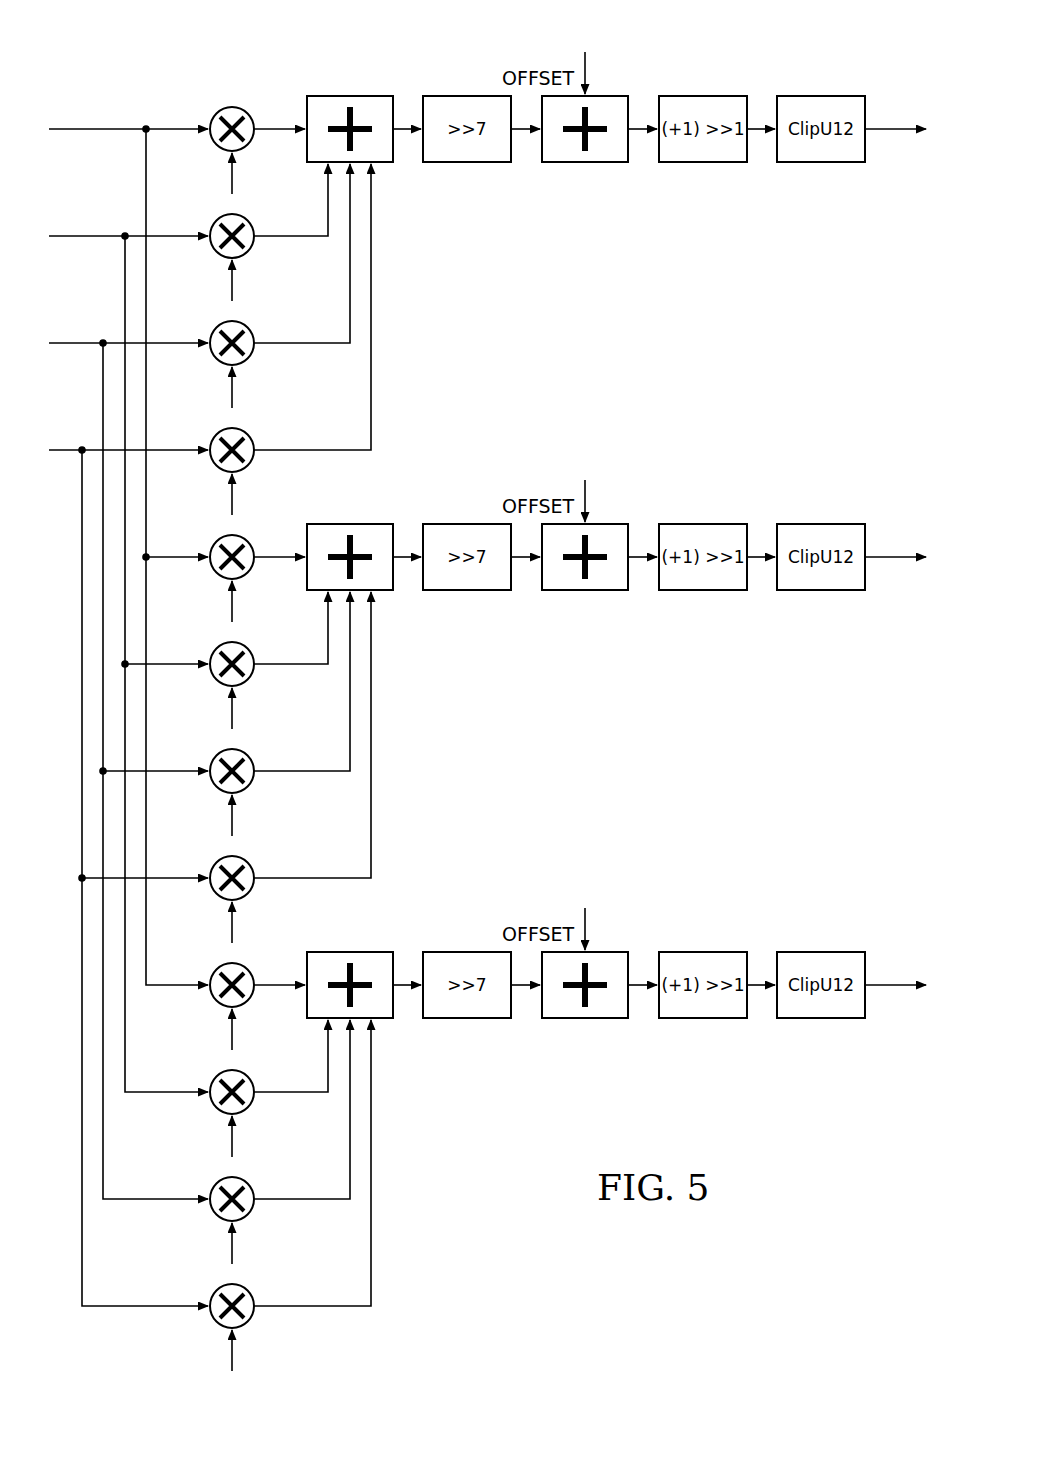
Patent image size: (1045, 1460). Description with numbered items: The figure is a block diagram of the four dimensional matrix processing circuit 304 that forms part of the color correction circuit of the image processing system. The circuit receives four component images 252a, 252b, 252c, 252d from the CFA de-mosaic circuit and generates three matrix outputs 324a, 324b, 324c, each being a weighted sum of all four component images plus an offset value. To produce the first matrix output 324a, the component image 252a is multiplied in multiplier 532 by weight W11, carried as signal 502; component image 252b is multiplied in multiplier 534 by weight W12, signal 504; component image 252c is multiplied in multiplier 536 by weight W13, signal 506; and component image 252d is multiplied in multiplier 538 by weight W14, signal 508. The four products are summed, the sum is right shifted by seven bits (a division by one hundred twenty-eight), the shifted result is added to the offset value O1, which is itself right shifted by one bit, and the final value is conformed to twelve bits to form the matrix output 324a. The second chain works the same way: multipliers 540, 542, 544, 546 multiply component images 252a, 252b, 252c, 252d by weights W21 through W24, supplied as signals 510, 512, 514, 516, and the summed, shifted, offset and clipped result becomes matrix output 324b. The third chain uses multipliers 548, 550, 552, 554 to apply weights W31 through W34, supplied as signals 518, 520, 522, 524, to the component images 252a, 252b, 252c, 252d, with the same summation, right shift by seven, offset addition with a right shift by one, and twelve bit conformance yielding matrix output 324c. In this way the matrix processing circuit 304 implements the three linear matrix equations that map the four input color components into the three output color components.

The 4D matrix processing circuit 304 is at (780, 60).
The component image 252a is at (98, 127).
The component image 252b is at (98, 233).
The component image 252c is at (88, 340).
The component image 252d is at (78, 448).
The matrix output 324a is at (893, 127).
The matrix output 324b is at (893, 555).
The matrix output 324c is at (893, 988).
The signal 502 is at (232, 179).
The signal 504 is at (232, 286).
The signal 506 is at (232, 393).
The signal 508 is at (232, 500).
The signal 510 is at (232, 607).
The signal 512 is at (232, 714).
The signal 514 is at (232, 821).
The signal 516 is at (232, 928).
The signal 518 is at (232, 1035).
The signal 520 is at (232, 1142).
The signal 522 is at (232, 1249).
The signal 524 is at (232, 1356).
The multiplier 532 is at (243, 148).
The multiplier 534 is at (243, 255).
The multiplier 536 is at (243, 362).
The multiplier 538 is at (243, 469).
The multiplier 540 is at (243, 576).
The multiplier 542 is at (243, 683).
The multiplier 544 is at (243, 790).
The multiplier 546 is at (243, 897).
The multiplier 548 is at (243, 1004).
The multiplier 550 is at (243, 1111).
The multiplier 552 is at (243, 1218).
The multiplier 554 is at (243, 1325).